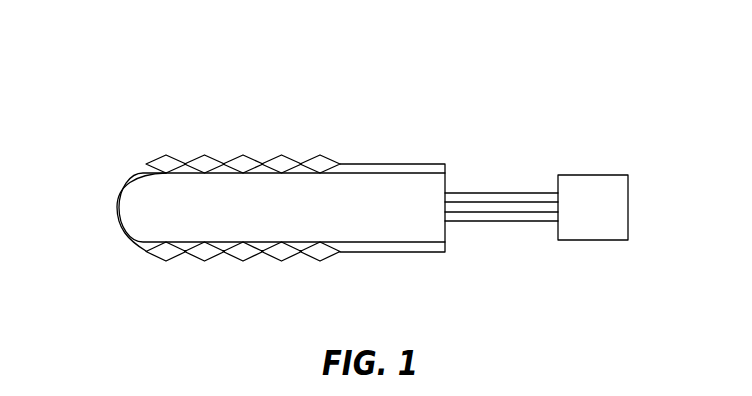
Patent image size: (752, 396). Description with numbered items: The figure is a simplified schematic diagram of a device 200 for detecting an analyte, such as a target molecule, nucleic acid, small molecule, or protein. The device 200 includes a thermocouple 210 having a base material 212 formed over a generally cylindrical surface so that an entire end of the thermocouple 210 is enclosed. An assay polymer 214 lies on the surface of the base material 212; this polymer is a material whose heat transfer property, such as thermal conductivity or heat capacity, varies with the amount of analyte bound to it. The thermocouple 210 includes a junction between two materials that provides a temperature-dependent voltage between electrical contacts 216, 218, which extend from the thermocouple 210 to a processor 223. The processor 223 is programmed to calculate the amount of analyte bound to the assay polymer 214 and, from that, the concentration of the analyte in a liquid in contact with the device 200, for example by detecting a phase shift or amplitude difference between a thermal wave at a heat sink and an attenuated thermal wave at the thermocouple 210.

The device 200 is at (100, 97).
The thermocouple 210 is at (436, 186).
The base material 212 is at (378, 165).
The assay polymer 214 is at (254, 162).
The electrical contact 216 is at (537, 191).
The electrical contact 218 is at (528, 223).
The processor 223 is at (628, 210).